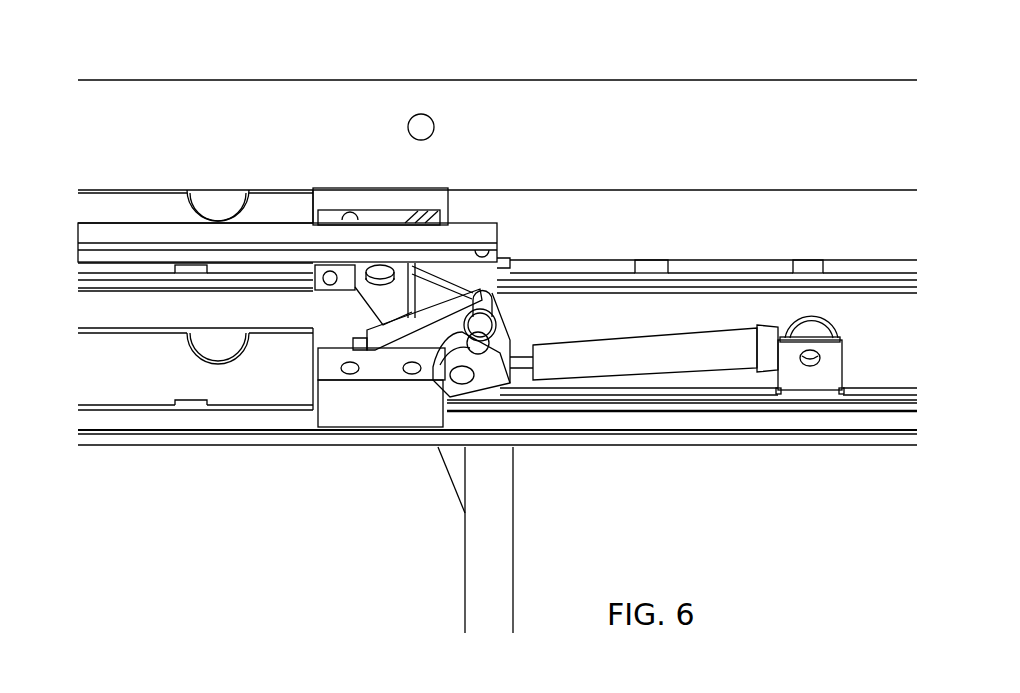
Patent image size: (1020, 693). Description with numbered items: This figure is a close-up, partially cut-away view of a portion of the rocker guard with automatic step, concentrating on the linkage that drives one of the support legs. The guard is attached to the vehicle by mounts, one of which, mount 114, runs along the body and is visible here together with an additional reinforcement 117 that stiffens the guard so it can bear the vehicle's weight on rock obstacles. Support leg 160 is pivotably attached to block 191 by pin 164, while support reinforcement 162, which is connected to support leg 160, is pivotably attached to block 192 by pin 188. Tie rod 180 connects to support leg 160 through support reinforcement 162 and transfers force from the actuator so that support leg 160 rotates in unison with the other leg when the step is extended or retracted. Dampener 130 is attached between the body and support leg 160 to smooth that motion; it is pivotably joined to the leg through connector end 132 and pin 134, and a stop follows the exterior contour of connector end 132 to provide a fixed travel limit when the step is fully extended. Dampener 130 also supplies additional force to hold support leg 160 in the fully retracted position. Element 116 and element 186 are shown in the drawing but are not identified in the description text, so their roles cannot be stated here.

The mount 114 is at (513, 95).
The bracket 116 is at (620, 190).
The reinforcement 117 is at (133, 205).
The dampener 130 is at (723, 358).
The connector end 132 is at (507, 400).
The pin 134 is at (447, 387).
The support leg 160 is at (507, 593).
The support reinforcement 162 is at (443, 470).
The pin 164 is at (362, 332).
The tie rod 180 is at (270, 233).
The pin 186 is at (503, 305).
The pin 188 is at (500, 232).
The block 191 is at (345, 417).
The block 192 is at (410, 200).